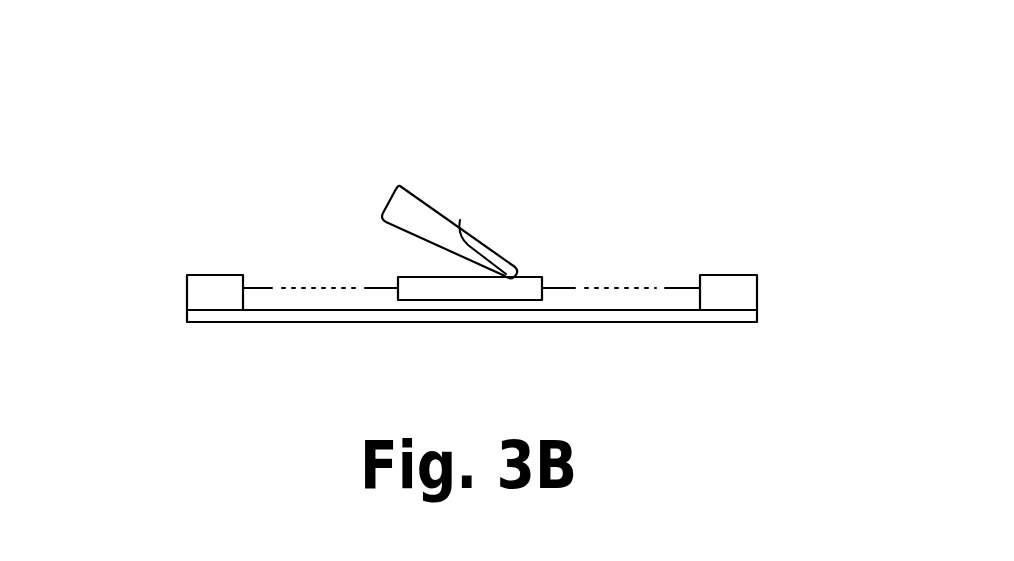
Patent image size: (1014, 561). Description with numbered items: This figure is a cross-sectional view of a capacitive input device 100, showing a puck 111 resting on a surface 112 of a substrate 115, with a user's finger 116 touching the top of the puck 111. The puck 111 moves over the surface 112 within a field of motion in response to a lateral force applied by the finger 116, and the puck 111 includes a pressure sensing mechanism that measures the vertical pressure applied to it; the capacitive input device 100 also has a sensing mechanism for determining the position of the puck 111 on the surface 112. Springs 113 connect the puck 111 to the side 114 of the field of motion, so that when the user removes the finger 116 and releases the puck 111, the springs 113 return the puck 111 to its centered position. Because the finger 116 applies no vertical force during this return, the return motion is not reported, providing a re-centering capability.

The capacitive input device 100 is at (147, 226).
The puck 111 is at (404, 280).
The surface 112 is at (328, 310).
The springs 113 is at (557, 288).
The side 114 is at (738, 276).
The substrate 115 is at (492, 322).
The finger 116 is at (438, 210).